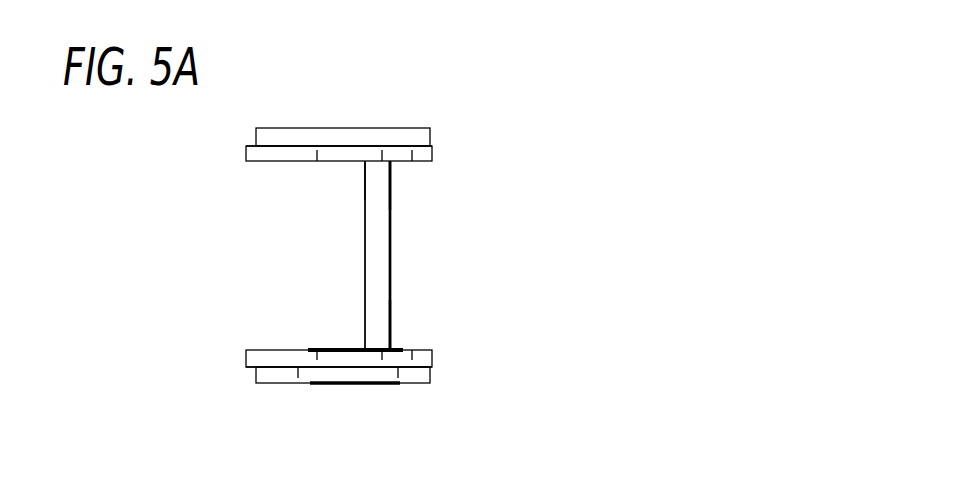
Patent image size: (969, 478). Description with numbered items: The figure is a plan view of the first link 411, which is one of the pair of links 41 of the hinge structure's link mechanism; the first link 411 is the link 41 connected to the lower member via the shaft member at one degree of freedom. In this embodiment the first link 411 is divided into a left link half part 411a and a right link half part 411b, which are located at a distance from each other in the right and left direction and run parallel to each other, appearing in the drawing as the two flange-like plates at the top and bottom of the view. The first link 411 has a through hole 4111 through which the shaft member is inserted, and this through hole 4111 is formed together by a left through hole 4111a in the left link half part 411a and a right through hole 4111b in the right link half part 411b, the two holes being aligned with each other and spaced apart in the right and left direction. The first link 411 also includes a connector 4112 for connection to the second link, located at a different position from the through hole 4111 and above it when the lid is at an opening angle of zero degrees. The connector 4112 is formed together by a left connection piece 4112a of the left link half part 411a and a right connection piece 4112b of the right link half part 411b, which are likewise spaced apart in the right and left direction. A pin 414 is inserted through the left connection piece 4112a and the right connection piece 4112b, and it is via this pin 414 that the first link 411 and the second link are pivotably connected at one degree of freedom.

The link 41 is at (439, 243).
The first link 411 is at (630, 200).
The left link half part 411a is at (433, 357).
The right link half part 411b is at (432, 157).
The through hole 4111 is at (260, 256).
The left through hole 4111a is at (330, 357).
The right through hole 4111b is at (333, 155).
The connector 4112 is at (480, 251).
The left connection piece 4112a is at (415, 348).
The right connection piece 4112b is at (408, 153).
The pin 414 is at (378, 260).